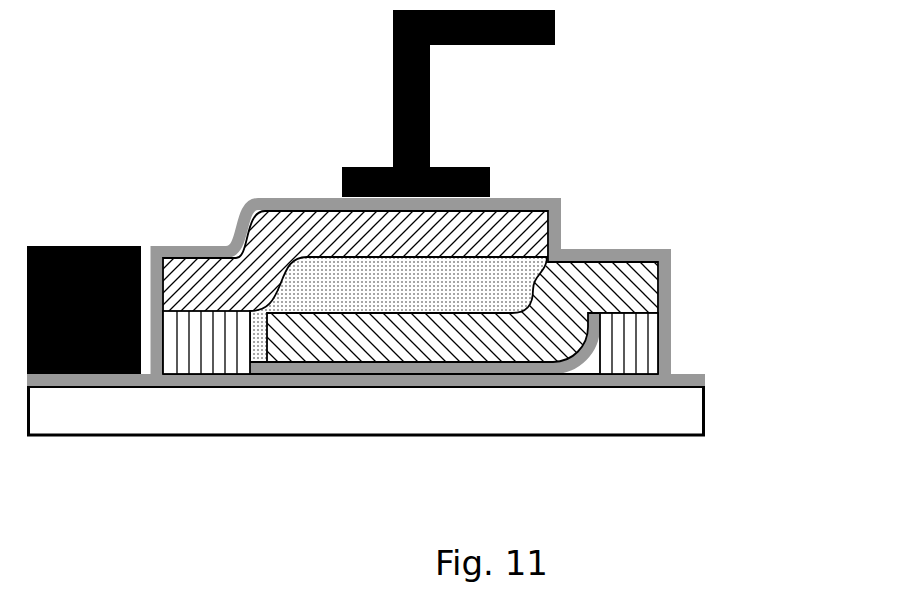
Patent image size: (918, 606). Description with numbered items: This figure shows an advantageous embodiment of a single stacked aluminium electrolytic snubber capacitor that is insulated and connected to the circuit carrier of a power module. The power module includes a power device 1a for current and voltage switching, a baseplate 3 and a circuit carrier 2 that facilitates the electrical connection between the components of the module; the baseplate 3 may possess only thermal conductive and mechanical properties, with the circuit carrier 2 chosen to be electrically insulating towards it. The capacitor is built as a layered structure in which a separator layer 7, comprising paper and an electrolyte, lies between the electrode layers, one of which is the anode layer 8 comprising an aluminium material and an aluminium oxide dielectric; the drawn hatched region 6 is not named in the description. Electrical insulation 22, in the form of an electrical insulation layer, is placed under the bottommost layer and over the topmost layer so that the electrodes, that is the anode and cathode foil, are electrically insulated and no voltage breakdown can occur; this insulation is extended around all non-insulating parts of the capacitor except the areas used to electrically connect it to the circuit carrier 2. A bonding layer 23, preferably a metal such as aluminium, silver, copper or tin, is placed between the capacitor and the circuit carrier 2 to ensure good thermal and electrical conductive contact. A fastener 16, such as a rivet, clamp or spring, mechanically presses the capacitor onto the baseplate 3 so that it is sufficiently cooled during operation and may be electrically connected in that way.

The power device 1a is at (112, 246).
The circuit carrier 2 is at (707, 378).
The baseplate 3 is at (690, 410).
The first insulating layer 6 is at (503, 222).
The separator layer 7 is at (508, 291).
The anode layer 8 is at (632, 280).
The fastener 16 is at (393, 127).
The electrical insulation 22 is at (670, 353).
The bonding layer 23 is at (207, 333).